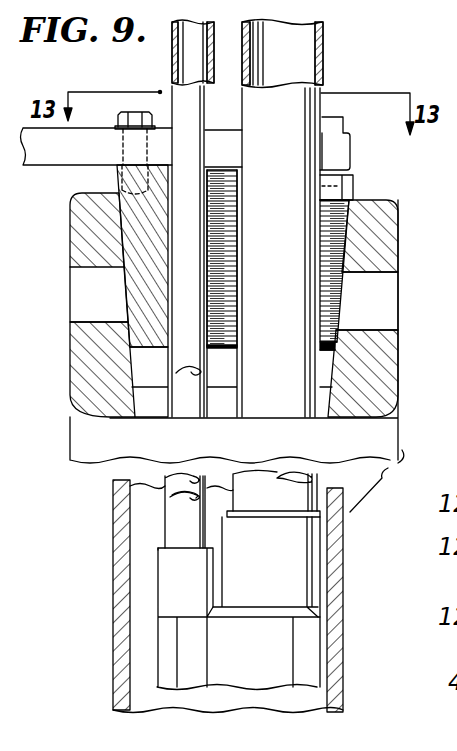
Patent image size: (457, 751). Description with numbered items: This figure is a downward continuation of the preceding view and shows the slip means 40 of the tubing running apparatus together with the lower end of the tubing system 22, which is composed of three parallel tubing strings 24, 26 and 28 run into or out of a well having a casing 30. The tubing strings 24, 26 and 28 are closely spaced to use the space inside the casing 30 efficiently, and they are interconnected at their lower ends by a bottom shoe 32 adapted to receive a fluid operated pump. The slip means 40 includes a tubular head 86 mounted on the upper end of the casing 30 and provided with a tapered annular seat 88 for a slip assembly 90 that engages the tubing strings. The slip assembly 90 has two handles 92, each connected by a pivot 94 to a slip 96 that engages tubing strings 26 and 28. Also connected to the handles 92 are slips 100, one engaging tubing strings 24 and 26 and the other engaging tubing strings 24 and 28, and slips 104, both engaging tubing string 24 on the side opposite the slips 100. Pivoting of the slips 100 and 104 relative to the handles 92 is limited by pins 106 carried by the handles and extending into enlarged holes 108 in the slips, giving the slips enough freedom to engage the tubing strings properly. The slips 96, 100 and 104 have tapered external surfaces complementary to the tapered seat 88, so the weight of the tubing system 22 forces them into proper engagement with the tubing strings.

The tubing system 22 is at (150, 543).
The tubing string 24 is at (323, 41).
The tubing string 26 is at (178, 493).
The tubing string 28 is at (178, 395).
The casing 30 is at (336, 566).
The bottom shoe 32 is at (272, 648).
The slip means 40 is at (370, 155).
The tubular head 86 is at (382, 221).
The tapered annular seat 88 is at (333, 340).
The slip assembly 90 is at (367, 172).
The handle 92 is at (53, 150).
The pivot 94 is at (135, 113).
The slip 96 is at (128, 237).
The slip 100 is at (228, 172).
The slip 104 is at (381, 252).
The pin 106 is at (332, 126).
The enlarged hole 108 is at (356, 187).